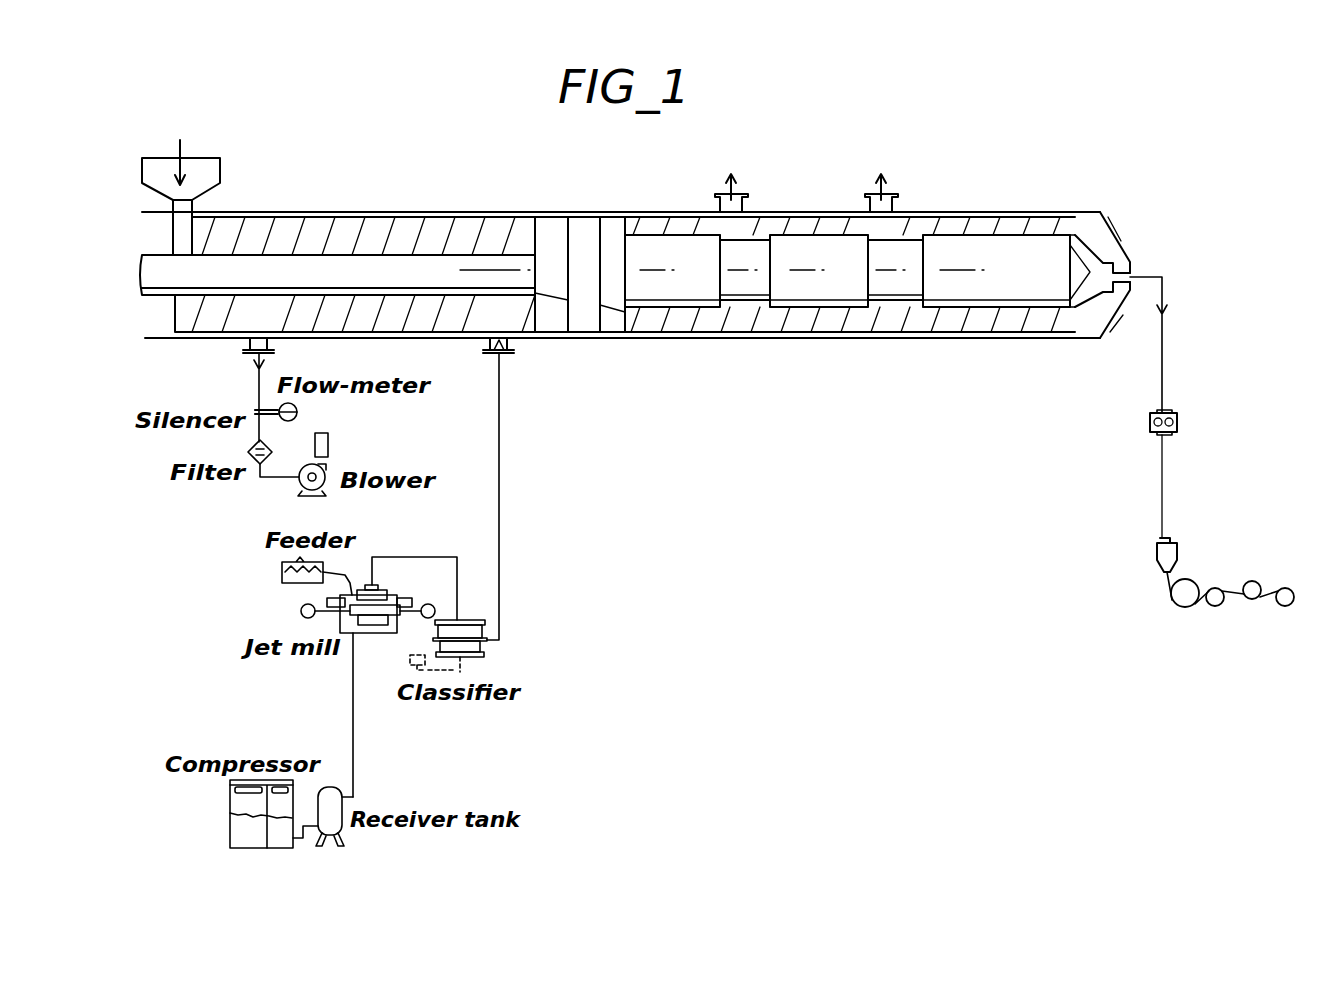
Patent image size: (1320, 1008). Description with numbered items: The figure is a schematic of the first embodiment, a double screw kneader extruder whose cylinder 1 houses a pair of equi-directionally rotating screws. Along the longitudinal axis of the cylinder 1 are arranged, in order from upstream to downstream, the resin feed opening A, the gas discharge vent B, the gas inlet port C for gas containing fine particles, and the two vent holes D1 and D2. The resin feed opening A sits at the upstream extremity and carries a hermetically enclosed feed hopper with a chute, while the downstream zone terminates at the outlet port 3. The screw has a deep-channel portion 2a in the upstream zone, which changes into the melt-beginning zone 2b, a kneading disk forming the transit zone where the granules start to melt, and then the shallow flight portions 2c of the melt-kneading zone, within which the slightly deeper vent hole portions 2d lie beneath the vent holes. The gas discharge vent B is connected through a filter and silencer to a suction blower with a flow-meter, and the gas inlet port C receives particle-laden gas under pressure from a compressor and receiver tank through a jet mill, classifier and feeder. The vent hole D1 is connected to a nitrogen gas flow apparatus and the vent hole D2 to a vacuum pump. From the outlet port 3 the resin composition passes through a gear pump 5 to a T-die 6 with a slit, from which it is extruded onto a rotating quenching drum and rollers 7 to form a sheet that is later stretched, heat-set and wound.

The cylinder 1 is at (280, 215).
The deep-channel portion 2a is at (331, 266).
The melt-beginning zone 2b is at (578, 248).
The shallow flight portion 2c is at (635, 243).
The vent hole portion 2d is at (752, 252).
The outlet port 3 is at (1121, 312).
The gear pump 5 is at (1177, 422).
The T-die 6 is at (1157, 563).
The rollers 7 is at (1283, 606).
The resin feed opening A is at (181, 197).
The gas discharge vent B is at (242, 390).
The gas inlet port C is at (485, 489).
The vent hole D1 is at (724, 188).
The vent hole D2 is at (889, 188).